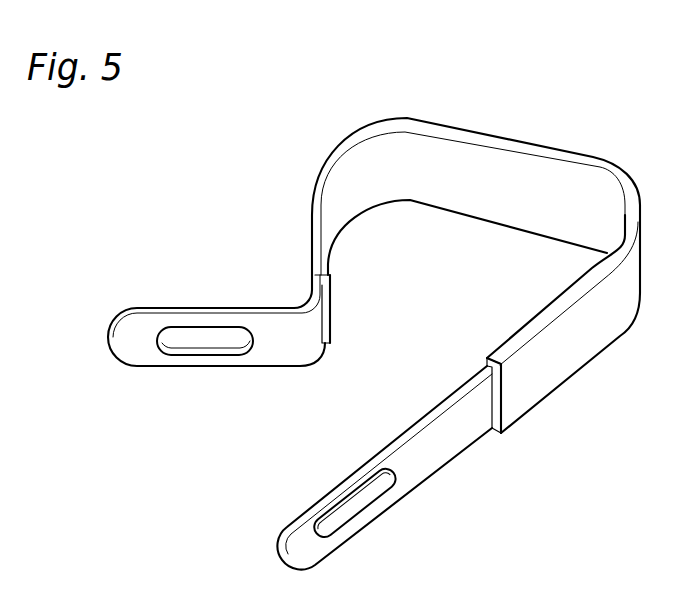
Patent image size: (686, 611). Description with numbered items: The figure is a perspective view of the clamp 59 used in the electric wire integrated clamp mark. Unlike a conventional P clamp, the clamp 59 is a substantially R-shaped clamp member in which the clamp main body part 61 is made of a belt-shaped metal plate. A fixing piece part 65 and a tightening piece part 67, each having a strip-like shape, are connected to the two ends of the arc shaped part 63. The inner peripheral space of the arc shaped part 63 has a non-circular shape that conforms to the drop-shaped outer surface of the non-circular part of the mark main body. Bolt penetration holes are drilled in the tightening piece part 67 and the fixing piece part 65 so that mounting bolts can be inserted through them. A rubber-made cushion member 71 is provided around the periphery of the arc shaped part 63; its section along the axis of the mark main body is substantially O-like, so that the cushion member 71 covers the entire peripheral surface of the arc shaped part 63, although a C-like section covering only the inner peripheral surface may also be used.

The clamp 59 is at (305, 148).
The clamp main body part 61 is at (450, 462).
The arc shaped part 63 is at (487, 138).
The fixing piece part 65 is at (332, 488).
The tightening piece part 67 is at (150, 305).
The cushion member 71 is at (550, 182).